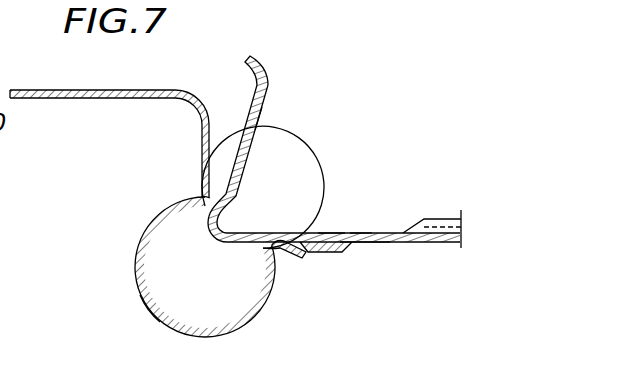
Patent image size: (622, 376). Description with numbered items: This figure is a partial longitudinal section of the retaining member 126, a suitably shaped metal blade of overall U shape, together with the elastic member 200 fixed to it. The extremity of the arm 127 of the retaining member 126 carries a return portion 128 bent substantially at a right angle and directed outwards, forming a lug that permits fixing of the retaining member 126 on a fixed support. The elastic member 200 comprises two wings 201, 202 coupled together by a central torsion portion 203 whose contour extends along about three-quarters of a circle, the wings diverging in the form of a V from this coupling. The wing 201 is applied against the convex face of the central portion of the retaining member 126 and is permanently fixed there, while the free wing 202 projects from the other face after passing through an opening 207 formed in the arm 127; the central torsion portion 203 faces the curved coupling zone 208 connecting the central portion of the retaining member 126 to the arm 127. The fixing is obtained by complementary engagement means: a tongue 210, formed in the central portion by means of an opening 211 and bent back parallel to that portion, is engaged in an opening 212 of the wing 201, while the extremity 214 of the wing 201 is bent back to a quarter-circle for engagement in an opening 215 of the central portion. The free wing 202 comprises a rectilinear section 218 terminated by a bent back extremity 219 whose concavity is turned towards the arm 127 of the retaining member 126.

The retaining member 126 is at (443, 244).
The arm of the retaining member 127 is at (208, 121).
The return portion 128 is at (43, 98).
The elastic member 200 is at (214, 340).
The wing of the elastic member 201 is at (348, 248).
The free wing of the elastic member 202 is at (252, 137).
The central torsion portion 203 is at (161, 323).
The opening 207 is at (204, 193).
The curved coupling zone 208 is at (229, 229).
The tongue 210 is at (309, 257).
The opening 211 is at (329, 234).
The opening 212 is at (288, 253).
The bent back extremity of the wing 214 is at (366, 246).
The opening 215 is at (356, 234).
The rectilinear section 218 is at (258, 110).
The curled tip 219 is at (263, 63).